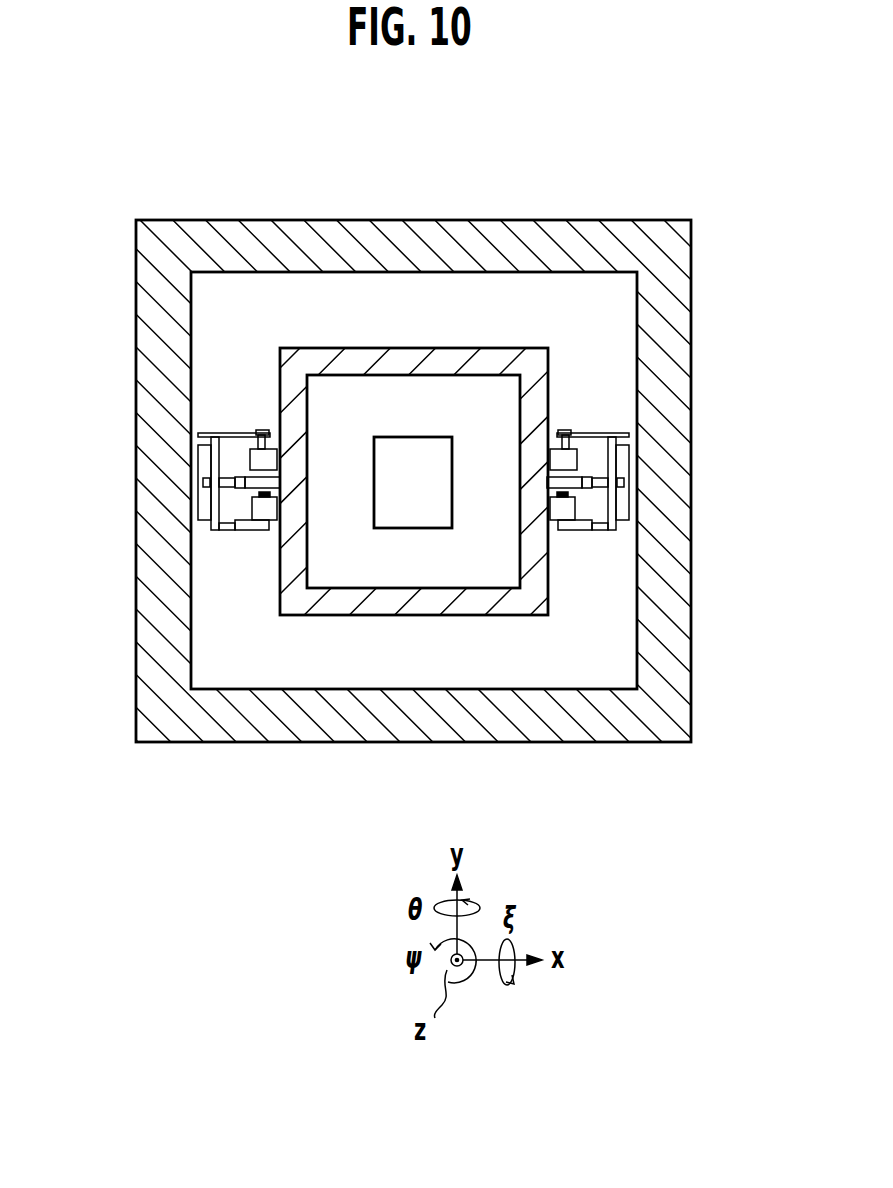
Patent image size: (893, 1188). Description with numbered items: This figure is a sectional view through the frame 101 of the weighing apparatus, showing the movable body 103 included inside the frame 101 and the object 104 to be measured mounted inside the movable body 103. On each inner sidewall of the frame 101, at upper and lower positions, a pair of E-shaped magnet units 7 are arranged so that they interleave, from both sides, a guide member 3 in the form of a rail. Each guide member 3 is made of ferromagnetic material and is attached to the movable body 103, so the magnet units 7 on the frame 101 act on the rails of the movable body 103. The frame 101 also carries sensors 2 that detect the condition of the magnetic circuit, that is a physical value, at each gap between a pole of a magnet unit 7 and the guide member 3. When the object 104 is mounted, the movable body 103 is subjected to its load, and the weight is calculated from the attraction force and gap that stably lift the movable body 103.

The frame 101 is at (320, 220).
The movable body 103 is at (440, 364).
The object to be measured 104 is at (418, 528).
The sensor 2 is at (263, 432).
The guide member 3 is at (250, 489).
The E-shaped magnet unit 7 is at (202, 471).